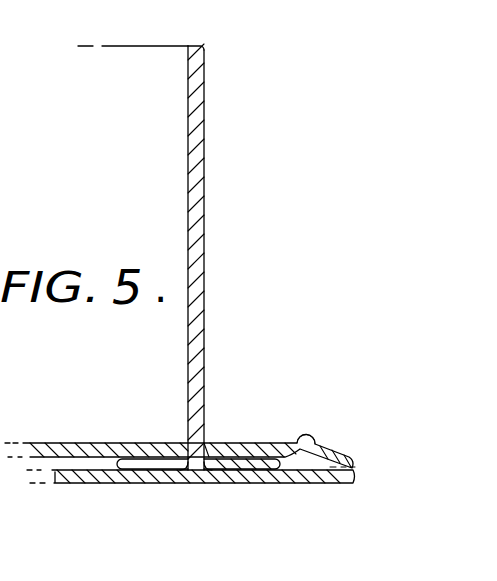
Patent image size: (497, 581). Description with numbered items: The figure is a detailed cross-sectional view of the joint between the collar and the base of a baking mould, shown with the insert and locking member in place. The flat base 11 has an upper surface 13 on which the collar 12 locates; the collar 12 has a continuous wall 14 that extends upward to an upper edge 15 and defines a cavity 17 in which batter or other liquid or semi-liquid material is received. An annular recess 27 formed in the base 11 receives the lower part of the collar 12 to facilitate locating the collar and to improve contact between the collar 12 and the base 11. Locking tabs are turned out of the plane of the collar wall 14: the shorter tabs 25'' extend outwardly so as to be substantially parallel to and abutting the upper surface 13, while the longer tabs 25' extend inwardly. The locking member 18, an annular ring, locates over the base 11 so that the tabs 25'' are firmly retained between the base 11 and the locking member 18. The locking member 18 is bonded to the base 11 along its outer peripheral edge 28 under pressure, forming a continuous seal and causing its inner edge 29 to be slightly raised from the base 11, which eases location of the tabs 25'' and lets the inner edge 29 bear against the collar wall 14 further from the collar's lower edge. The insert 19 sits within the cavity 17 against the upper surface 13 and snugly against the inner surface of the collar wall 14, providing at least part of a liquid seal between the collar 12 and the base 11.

The base 11 is at (127, 475).
The collar 12 is at (209, 156).
The upper surface 13 is at (297, 468).
The wall 14 is at (200, 303).
The upper edge 15 is at (193, 46).
The cavity 17 is at (133, 205).
The locking member 18 is at (329, 436).
The insert 19 is at (80, 447).
The longer locking tabs 25' is at (152, 425).
The shorter locking tabs 25'' is at (248, 425).
The annular recess 27 is at (197, 432).
The outer peripheral edge 28 is at (356, 474).
The inner edge 29 is at (206, 420).